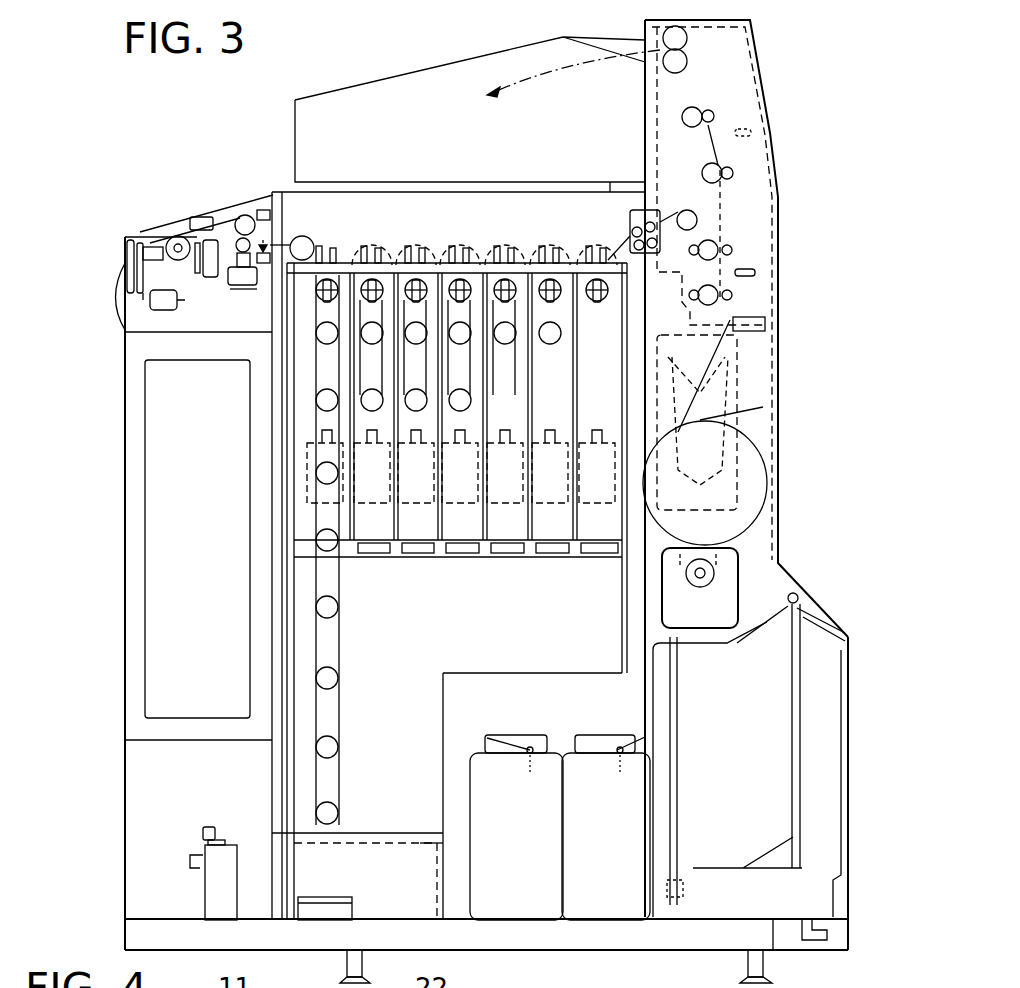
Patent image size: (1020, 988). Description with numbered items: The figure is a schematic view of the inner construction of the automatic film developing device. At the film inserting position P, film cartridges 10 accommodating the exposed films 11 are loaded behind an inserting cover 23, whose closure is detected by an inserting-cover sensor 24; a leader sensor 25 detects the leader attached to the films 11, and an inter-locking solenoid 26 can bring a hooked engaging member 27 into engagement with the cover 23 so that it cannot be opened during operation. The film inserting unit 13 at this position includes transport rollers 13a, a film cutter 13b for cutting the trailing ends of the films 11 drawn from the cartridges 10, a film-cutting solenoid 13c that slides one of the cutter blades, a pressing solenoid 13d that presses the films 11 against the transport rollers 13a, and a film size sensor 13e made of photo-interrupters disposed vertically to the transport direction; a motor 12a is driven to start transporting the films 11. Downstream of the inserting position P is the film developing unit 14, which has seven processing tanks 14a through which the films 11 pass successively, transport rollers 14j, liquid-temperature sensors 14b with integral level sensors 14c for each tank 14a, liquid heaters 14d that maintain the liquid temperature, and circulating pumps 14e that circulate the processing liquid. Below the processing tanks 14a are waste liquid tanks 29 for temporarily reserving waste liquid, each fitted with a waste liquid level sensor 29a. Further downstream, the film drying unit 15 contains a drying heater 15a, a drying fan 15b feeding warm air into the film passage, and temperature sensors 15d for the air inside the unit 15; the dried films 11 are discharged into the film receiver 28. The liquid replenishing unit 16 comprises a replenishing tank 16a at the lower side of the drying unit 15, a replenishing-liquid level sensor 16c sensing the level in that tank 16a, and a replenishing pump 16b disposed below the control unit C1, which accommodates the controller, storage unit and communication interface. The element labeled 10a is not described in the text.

The film receiver 28 is at (448, 83).
The film drying unit 15 is at (752, 192).
The temperature sensors 15d is at (751, 133).
The transport rollers 14j is at (692, 108).
The film developing unit 14 is at (528, 620).
The processing tanks 14a is at (450, 523).
The circulating pumps 14e is at (547, 503).
The liquid heaters 14d is at (418, 245).
The liquid-temperature sensors 14b is at (500, 247).
The level sensors 14c is at (590, 247).
The films 11 is at (345, 586).
The drying heater 15a is at (740, 365).
The drying fan 15b is at (764, 514).
The motor 12a is at (740, 548).
The liquid replenishing unit 16 is at (808, 795).
The replenishing tank 16a is at (753, 627).
The replenishing-liquid level sensor 16c is at (688, 875).
The waste liquid tanks 29 is at (597, 912).
The waste liquid level sensor 29a is at (590, 735).
The inserting-cover sensor 24 is at (150, 252).
The inserting cover 23 is at (150, 227).
The film cartridges 10 is at (176, 240).
The inter-locking solenoid 26 is at (167, 312).
The leader sensor 25 is at (203, 217).
The film-cutting solenoid 13c is at (185, 238).
The film cutter 13b is at (243, 215).
The transport rollers 13a is at (250, 208).
The film size sensor 13e is at (274, 220).
The pressing solenoid 13d is at (244, 290).
The film inserting unit 13 is at (215, 292).
The drum belt 10a is at (183, 255).
The hooked engaging member 27 is at (122, 333).
The film inserting position P is at (147, 163).
The control unit C1 is at (180, 708).
The replenishing pump 16b is at (236, 846).